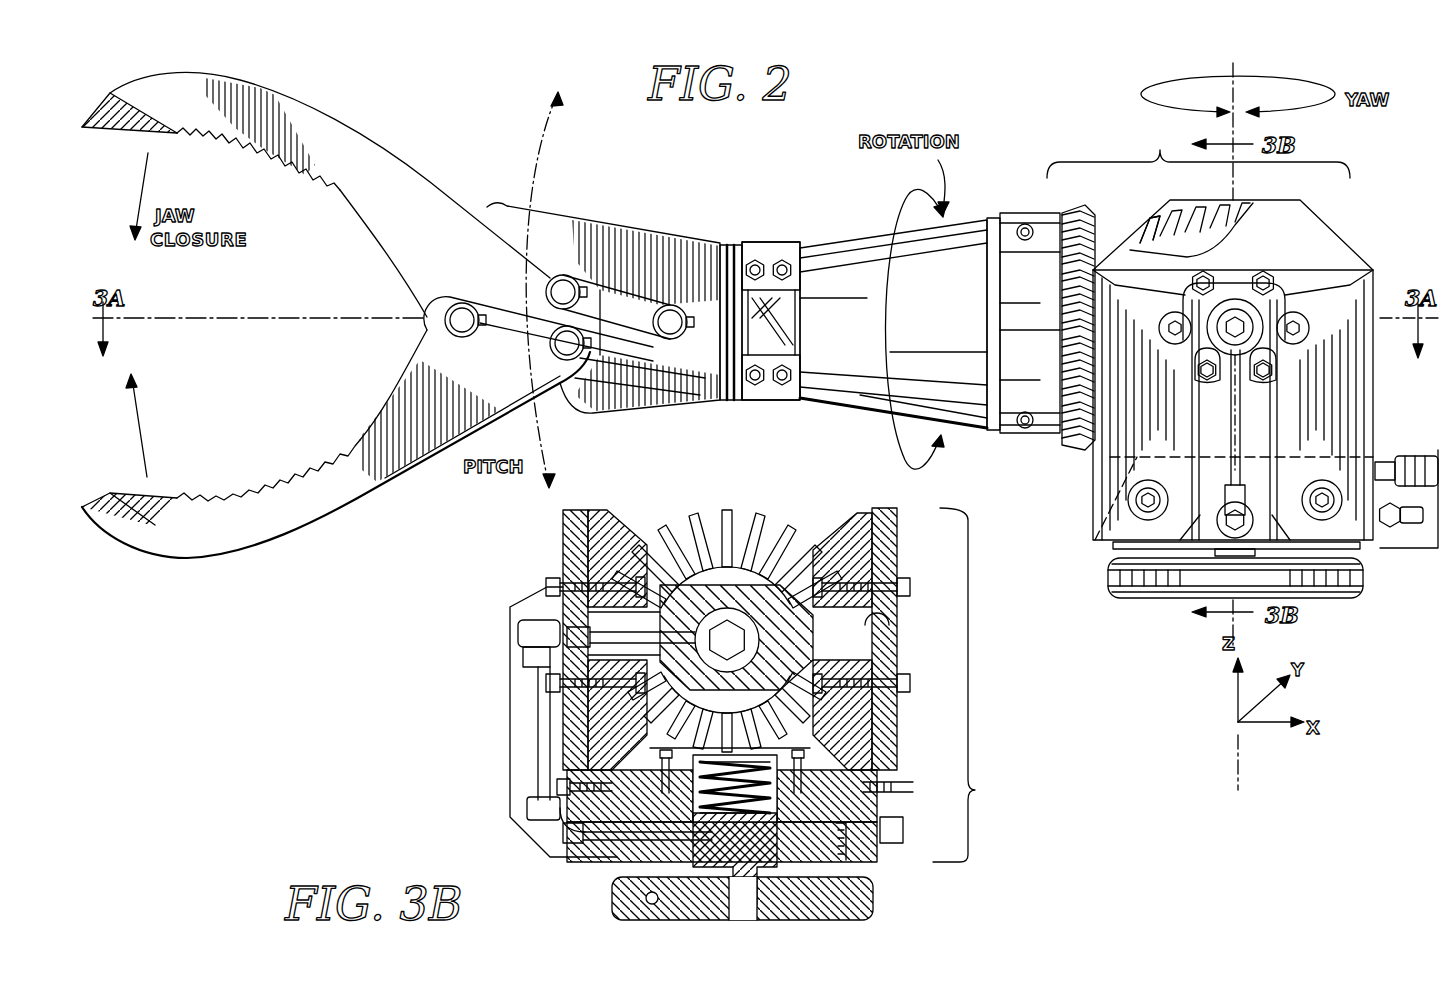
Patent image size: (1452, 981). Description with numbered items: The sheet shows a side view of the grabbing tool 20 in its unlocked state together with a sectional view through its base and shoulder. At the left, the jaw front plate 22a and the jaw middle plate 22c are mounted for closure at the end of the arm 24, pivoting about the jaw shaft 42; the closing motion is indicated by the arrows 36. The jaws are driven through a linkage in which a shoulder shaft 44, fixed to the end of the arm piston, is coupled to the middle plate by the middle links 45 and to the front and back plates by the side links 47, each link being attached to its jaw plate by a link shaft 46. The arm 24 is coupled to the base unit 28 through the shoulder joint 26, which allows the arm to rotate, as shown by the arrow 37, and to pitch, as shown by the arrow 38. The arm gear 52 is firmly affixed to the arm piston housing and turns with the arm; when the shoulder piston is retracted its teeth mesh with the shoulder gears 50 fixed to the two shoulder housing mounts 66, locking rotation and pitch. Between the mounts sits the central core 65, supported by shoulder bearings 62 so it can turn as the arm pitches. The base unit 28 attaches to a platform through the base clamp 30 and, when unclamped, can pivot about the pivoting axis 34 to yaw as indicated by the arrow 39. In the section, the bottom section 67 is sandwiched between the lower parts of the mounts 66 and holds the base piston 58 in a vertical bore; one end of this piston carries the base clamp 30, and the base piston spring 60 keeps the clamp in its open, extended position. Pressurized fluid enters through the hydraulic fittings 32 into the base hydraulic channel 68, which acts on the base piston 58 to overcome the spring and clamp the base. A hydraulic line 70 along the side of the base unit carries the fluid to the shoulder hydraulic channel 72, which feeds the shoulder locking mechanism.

In FIG. 2, the grabbing tool 20 is at (1261, 336).
In FIG. 2, the jaw front plate 22a is at (372, 488).
In FIG. 2, the jaw middle plate 22c is at (345, 133).
In FIG. 2, the arm 24 is at (832, 248).
In FIG. 2, the shoulder joint 26 is at (1160, 150).
In FIG. 2, the base unit 28 is at (1375, 392).
In FIG. 3B, the base unit 28 is at (976, 685).
In FIG. 2, the base clamp 30 is at (1370, 580).
In FIG. 3B, the base clamp 30 is at (871, 893).
In FIG. 2, the hydraulic fittings 32 is at (1403, 552).
In FIG. 2, the pivoting axis 34 is at (1237, 108).
In FIG. 2, the arrows 36 is at (133, 208).
In FIG. 2, the arrow 37 is at (890, 445).
In FIG. 2, the arrow 38 is at (538, 160).
In FIG. 2, the arrow 39 is at (1160, 80).
In FIG. 2, the jaw shaft 42 is at (462, 306).
In FIG. 2, the shoulder shaft 44 is at (670, 306).
In FIG. 2, the middle links 45 is at (632, 352).
In FIG. 2, the link shaft 46 is at (558, 280).
In FIG. 2, the side links 47 is at (600, 288).
In FIG. 2, the shoulder gears 50 is at (1250, 208).
In FIG. 3B, the shoulder gears 50 is at (620, 540).
In FIG. 2, the arm gear 52 is at (1078, 440).
In FIG. 3B, the arm gear 52 is at (762, 525).
In FIG. 3B, the base piston 58 is at (760, 848).
In FIG. 3B, the base piston spring 60 is at (697, 797).
In FIG. 3B, the shoulder bearings 62 is at (895, 625).
In FIG. 3B, the central core 65 is at (897, 652).
In FIG. 3B, the shoulder housing mounts 66 is at (563, 532).
In FIG. 3B, the bottom section 67 is at (570, 767).
In FIG. 3B, the base hydraulic channel 68 is at (598, 866).
In FIG. 3B, the hydraulic line 70 is at (535, 730).
In FIG. 3B, the shoulder hydraulic channel 72 is at (643, 645).